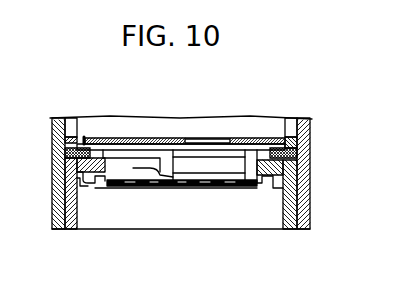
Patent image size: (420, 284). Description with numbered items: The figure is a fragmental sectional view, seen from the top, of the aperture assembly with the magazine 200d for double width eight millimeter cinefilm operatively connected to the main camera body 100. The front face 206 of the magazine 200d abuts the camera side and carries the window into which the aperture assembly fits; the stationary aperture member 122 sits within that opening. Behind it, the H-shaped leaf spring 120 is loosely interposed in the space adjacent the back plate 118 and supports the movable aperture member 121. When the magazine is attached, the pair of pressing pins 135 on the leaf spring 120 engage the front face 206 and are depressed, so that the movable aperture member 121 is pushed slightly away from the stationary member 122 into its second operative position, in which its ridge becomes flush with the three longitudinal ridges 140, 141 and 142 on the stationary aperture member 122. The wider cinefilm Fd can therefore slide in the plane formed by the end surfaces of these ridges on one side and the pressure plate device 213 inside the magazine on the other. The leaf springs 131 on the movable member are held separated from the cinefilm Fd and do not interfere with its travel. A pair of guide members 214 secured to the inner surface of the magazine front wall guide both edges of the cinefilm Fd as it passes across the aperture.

The main camera body 100 is at (310, 122).
The back plate 118 is at (145, 138).
The H-shaped leaf spring 120 is at (173, 145).
The movable aperture member 121 is at (207, 140).
The stationary aperture member 122 is at (222, 176).
The leaf springs 131 is at (166, 190).
The pressing pins 135 is at (91, 137).
The longitudinal ridge 140 is at (233, 190).
The longitudinal ridge 141 is at (180, 189).
The longitudinal ridge 142 is at (105, 188).
The magazine 200d is at (262, 229).
The front face 206 is at (70, 153).
The pressure plate device 213 is at (120, 187).
The guide members 214 is at (267, 188).
The cinefilm Fd is at (195, 176).